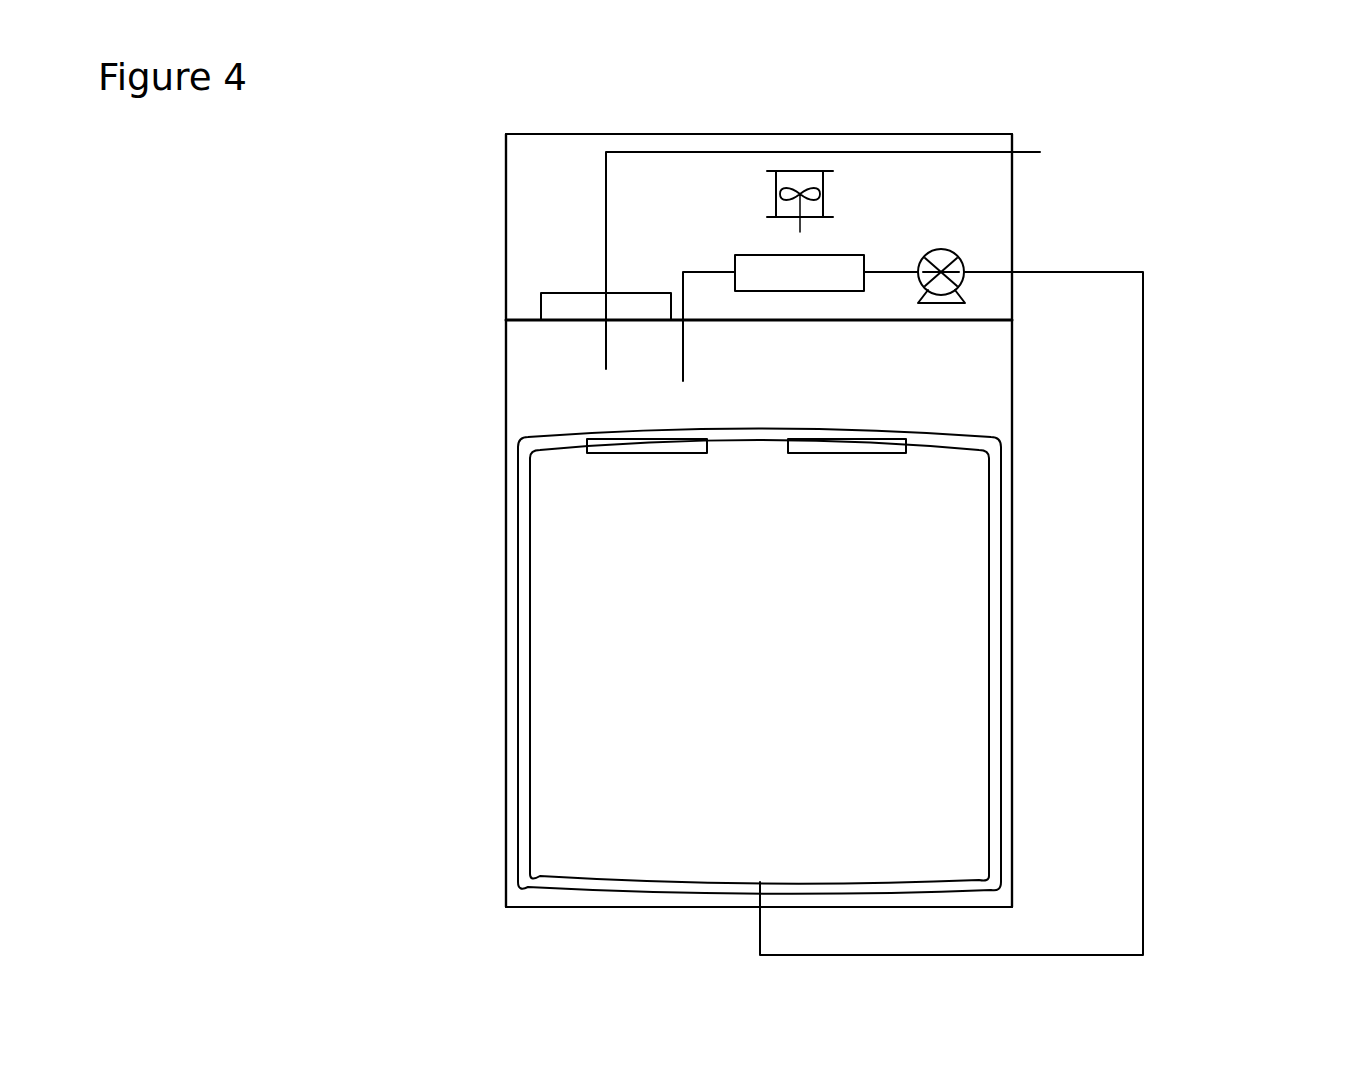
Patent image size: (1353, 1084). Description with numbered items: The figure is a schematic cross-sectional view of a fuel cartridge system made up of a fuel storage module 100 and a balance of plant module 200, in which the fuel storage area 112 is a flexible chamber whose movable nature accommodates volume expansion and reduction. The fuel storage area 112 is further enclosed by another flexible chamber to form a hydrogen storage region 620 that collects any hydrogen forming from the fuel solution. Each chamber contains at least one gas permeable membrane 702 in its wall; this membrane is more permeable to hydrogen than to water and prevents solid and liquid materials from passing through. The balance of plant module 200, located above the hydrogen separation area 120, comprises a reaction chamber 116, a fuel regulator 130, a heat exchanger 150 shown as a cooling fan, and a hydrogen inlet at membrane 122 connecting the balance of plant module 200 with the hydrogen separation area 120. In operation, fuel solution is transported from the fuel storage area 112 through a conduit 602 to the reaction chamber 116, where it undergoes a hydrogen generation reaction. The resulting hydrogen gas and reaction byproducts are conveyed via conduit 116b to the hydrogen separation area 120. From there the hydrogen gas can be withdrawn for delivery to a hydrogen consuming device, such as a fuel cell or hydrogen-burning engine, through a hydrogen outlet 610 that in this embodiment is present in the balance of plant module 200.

The fuel storage module 100 is at (472, 718).
The balance of plant module 200 is at (483, 187).
The fuel storage area 112 is at (949, 583).
The reaction chamber 116 is at (861, 267).
The conduit 116b is at (682, 369).
The hydrogen separation area 120 is at (949, 379).
The membrane 122 is at (549, 311).
The fuel regulator 130 is at (963, 266).
The heat exchanger 150 is at (805, 177).
The conduit 602 is at (1150, 471).
The hydrogen outlet 610 is at (1040, 152).
The hydrogen storage region 620 is at (994, 787).
The gas permeable membrane 702 is at (638, 458).